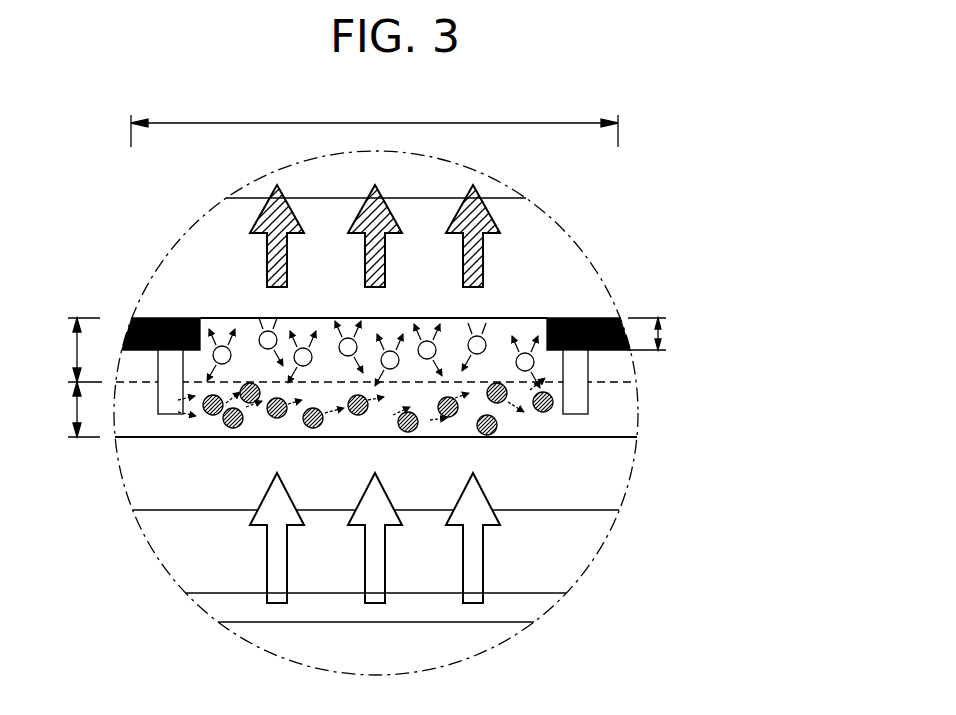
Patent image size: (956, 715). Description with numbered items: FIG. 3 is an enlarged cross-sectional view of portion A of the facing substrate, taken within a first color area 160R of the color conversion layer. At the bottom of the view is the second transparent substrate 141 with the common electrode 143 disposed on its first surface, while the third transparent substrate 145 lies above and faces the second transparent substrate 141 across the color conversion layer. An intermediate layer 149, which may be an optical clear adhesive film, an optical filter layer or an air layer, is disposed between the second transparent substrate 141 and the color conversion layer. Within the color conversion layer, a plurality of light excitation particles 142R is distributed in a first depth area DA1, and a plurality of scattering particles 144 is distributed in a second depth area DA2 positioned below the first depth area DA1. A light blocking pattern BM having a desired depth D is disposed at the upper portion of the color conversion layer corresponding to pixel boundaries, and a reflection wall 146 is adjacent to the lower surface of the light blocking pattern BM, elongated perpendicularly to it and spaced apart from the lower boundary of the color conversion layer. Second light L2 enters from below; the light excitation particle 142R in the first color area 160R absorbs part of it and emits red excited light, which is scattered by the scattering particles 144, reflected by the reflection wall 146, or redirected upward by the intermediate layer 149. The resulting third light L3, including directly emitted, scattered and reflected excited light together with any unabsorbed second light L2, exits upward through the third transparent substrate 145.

The portion A is at (155, 270).
The first color area 160R is at (374, 119).
The third transparent substrate 145 is at (586, 262).
The third light L3 is at (381, 238).
The light blocking pattern BM is at (583, 317).
The depth D is at (657, 334).
The first depth area DA1 is at (68, 350).
The second depth area DA2 is at (67, 409).
The light excitation particle 142R is at (533, 360).
The reflection wall 146 is at (583, 393).
The scattering particle 144 is at (553, 400).
The intermediate layer 149 is at (618, 477).
The second transparent substrate 141 is at (578, 562).
The common electrode 143 is at (540, 607).
The second light L2 is at (381, 538).